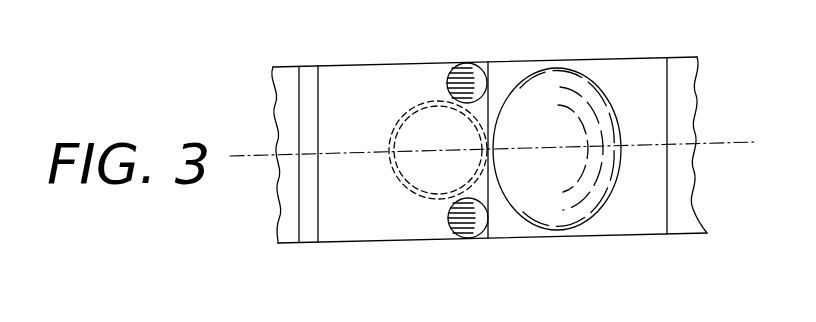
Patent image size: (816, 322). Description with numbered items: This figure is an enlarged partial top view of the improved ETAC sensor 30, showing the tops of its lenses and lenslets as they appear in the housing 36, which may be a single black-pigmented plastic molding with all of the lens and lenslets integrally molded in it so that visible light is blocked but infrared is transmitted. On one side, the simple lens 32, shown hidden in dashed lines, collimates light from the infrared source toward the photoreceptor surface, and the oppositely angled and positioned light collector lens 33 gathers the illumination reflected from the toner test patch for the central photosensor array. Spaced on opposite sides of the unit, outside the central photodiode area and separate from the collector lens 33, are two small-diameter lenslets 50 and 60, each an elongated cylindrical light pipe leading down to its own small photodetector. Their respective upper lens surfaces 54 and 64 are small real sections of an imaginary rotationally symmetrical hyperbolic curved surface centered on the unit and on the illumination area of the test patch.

The ETAC sensor 30 is at (502, 53).
The simple lens 32 is at (432, 188).
The light collector lens 33 is at (575, 83).
The housing 36 is at (348, 230).
The lenslet 50 is at (470, 66).
The upper lens surface 54 is at (460, 78).
The lenslet 60 is at (480, 225).
The upper lens surface 64 is at (488, 238).